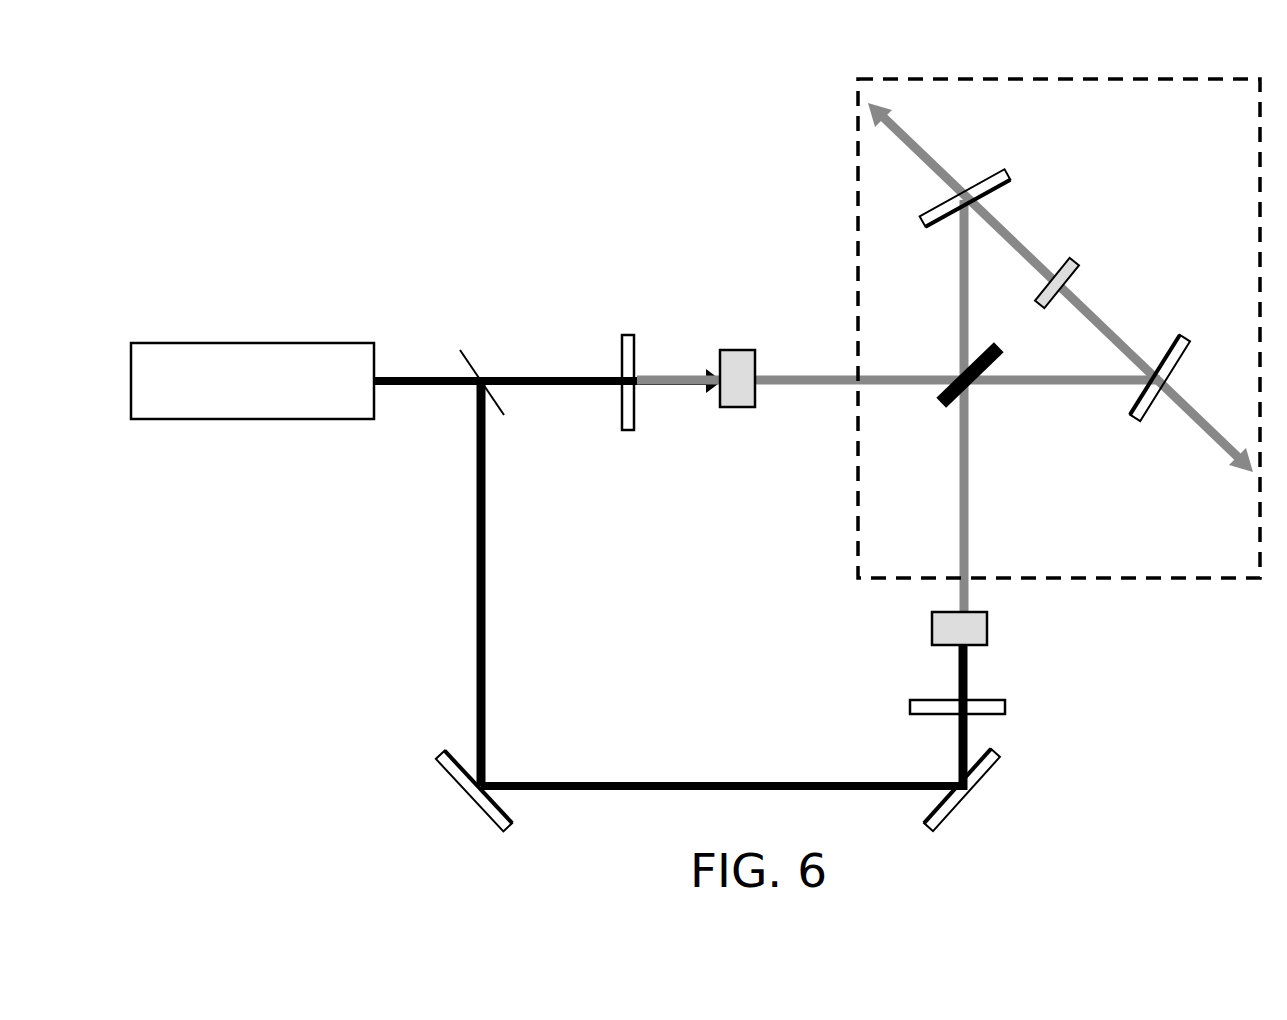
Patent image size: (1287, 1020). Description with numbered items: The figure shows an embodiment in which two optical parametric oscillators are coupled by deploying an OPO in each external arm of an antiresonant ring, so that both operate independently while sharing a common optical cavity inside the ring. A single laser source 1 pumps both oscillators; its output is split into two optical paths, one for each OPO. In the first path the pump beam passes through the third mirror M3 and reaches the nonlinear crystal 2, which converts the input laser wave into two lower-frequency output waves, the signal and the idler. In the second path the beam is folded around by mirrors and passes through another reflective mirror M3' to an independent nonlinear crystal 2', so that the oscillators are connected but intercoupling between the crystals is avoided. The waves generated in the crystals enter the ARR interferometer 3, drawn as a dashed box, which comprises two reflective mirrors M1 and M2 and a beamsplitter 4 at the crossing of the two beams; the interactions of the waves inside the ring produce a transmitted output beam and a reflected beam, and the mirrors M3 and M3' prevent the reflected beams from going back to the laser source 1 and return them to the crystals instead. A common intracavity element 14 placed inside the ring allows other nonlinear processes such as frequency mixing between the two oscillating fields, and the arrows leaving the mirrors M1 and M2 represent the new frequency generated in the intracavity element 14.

The laser source 1 is at (258, 342).
The nonlinear crystal 2 is at (723, 338).
The independent nonlinear crystal 2' is at (1007, 643).
The ARR interferometer 3 is at (857, 207).
The beamsplitter 4 is at (950, 365).
The common intracavity element 14 is at (1077, 263).
The reflective mirror M1 is at (983, 178).
The reflective mirror M2 is at (1148, 420).
The third mirror M3 is at (604, 427).
The reflective mirror M3' is at (1011, 728).